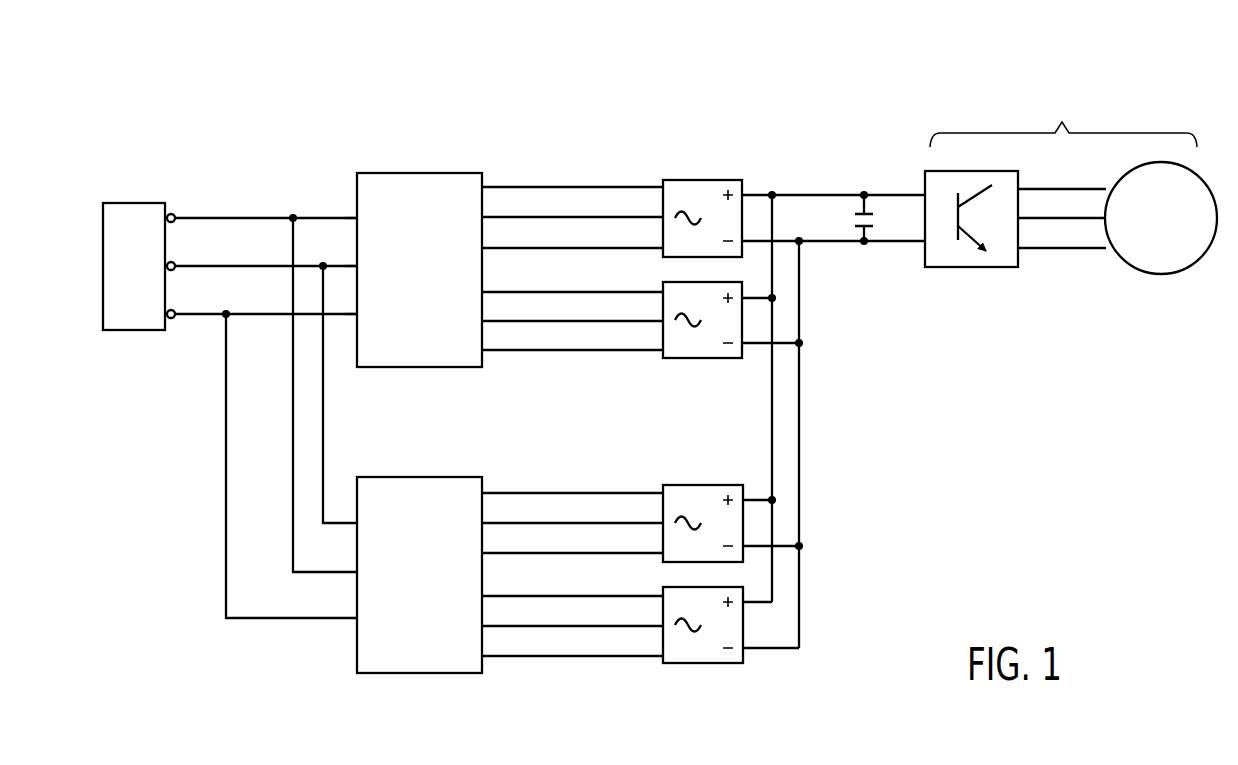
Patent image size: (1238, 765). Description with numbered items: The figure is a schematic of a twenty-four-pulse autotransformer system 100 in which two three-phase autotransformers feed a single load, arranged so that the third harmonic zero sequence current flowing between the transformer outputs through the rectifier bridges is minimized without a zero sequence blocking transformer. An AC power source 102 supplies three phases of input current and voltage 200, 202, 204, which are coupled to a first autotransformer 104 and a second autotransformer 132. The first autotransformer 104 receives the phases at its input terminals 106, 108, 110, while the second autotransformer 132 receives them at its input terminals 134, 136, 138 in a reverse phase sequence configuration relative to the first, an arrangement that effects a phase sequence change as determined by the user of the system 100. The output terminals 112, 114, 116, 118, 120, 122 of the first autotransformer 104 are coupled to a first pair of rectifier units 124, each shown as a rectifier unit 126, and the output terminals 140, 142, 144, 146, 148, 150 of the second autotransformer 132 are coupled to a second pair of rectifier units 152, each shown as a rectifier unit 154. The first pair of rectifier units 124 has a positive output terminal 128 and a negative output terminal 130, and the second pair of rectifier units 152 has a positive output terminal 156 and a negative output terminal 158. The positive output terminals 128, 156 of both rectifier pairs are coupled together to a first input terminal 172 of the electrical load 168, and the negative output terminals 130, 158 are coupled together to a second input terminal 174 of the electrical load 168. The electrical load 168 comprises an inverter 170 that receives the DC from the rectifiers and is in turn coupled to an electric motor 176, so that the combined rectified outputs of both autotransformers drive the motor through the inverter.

The 24-pulse autotransformer system 100 is at (723, 55).
The AC power source 102 is at (118, 278).
The first autotransformer 104 is at (418, 172).
The input terminal 106 is at (348, 212).
The input terminal 108 is at (348, 256).
The input terminal 110 is at (348, 323).
The output terminal 112 is at (489, 184).
The output terminal 114 is at (489, 214).
The output terminal 116 is at (489, 245).
The output terminal 118 is at (489, 289).
The output terminal 120 is at (489, 318).
The output terminal 122 is at (489, 347).
The first pair of rectifier units 124 is at (715, 167).
The rectifier unit 126 is at (653, 181).
The positive output terminal 128 is at (748, 188).
The negative output terminal 130 is at (748, 234).
The second autotransformer 132 is at (417, 477).
The input terminal 134 is at (347, 511).
The input terminal 136 is at (348, 560).
The input terminal 138 is at (348, 628).
The output terminal 140 is at (489, 490).
The output terminal 142 is at (489, 520).
The output terminal 144 is at (489, 550).
The output terminal 146 is at (489, 593).
The output terminal 148 is at (489, 623).
The output terminal 150 is at (489, 653).
The second pair of rectifier units 152 is at (698, 473).
The rectifier unit 154 is at (653, 483).
The positive output terminal 156 is at (748, 493).
The negative output terminal 158 is at (748, 540).
The electrical load 168 is at (1072, 189).
The inverter 170 is at (975, 268).
The first input terminal 172 is at (912, 182).
The second input terminal 174 is at (912, 252).
The electric motor 176 is at (1160, 275).
The input phase 200 is at (197, 218).
The input phase 202 is at (197, 266).
The input phase 204 is at (197, 314).